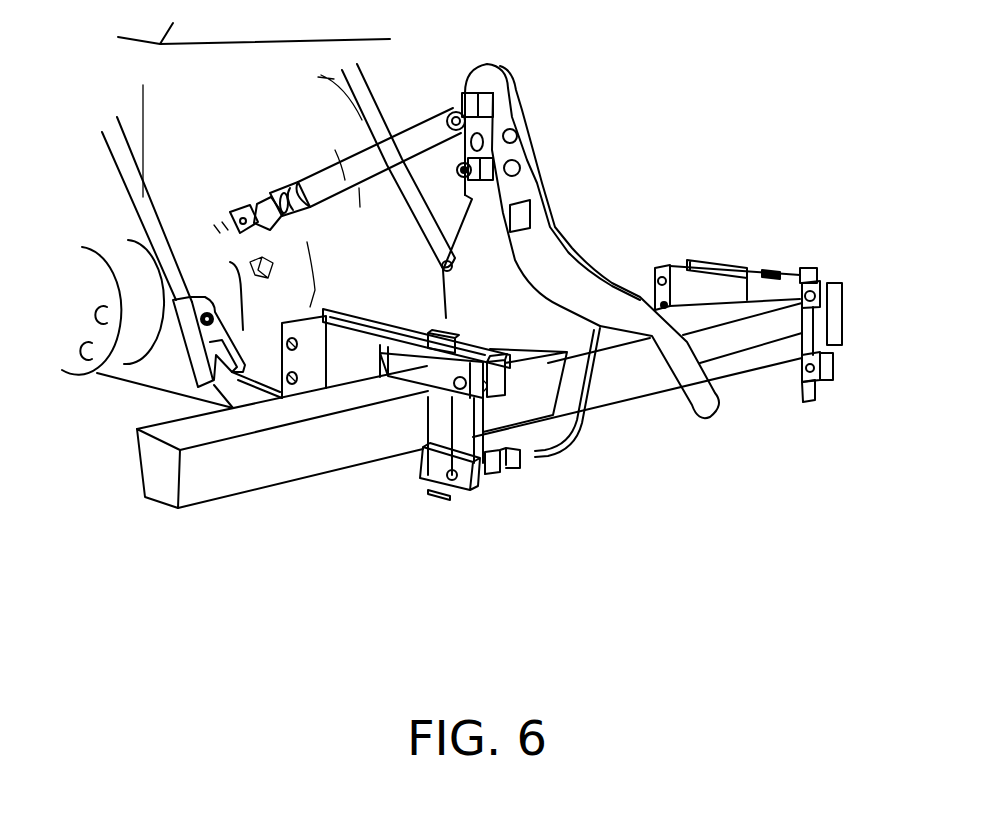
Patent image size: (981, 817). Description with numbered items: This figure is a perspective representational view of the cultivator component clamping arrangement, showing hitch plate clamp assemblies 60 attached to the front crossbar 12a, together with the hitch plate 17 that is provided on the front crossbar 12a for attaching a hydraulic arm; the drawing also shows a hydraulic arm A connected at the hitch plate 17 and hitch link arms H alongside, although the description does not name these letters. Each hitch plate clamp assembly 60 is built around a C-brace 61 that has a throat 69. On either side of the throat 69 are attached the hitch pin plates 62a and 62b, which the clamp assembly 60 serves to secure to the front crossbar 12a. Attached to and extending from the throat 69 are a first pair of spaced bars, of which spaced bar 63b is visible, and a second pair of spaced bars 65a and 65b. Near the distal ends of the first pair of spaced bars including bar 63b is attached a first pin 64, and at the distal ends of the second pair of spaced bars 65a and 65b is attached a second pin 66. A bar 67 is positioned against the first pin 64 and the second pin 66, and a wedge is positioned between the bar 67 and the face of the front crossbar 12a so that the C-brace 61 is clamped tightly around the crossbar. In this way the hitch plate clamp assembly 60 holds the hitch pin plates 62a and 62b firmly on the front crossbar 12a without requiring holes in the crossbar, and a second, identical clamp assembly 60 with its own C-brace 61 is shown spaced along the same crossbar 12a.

The front crossbar 12a is at (222, 487).
The hitch plate 17 is at (548, 248).
The hitch plate clamp assembly 60 is at (582, 316).
The C-brace 61 is at (800, 265).
The hitch pin plate 62a is at (308, 345).
The hitch pin plate 62b is at (326, 312).
The spaced bar of first pair 63b is at (505, 357).
The first pin 64 is at (457, 358).
The spaced bar of second pair 65a is at (478, 492).
The spaced bar of second pair 65b is at (505, 468).
The second pin 66 is at (447, 478).
The bar 67 is at (485, 430).
The throat 69 is at (372, 337).
The hydraulic actuator A is at (318, 178).
The hitch link arms H is at (147, 187).